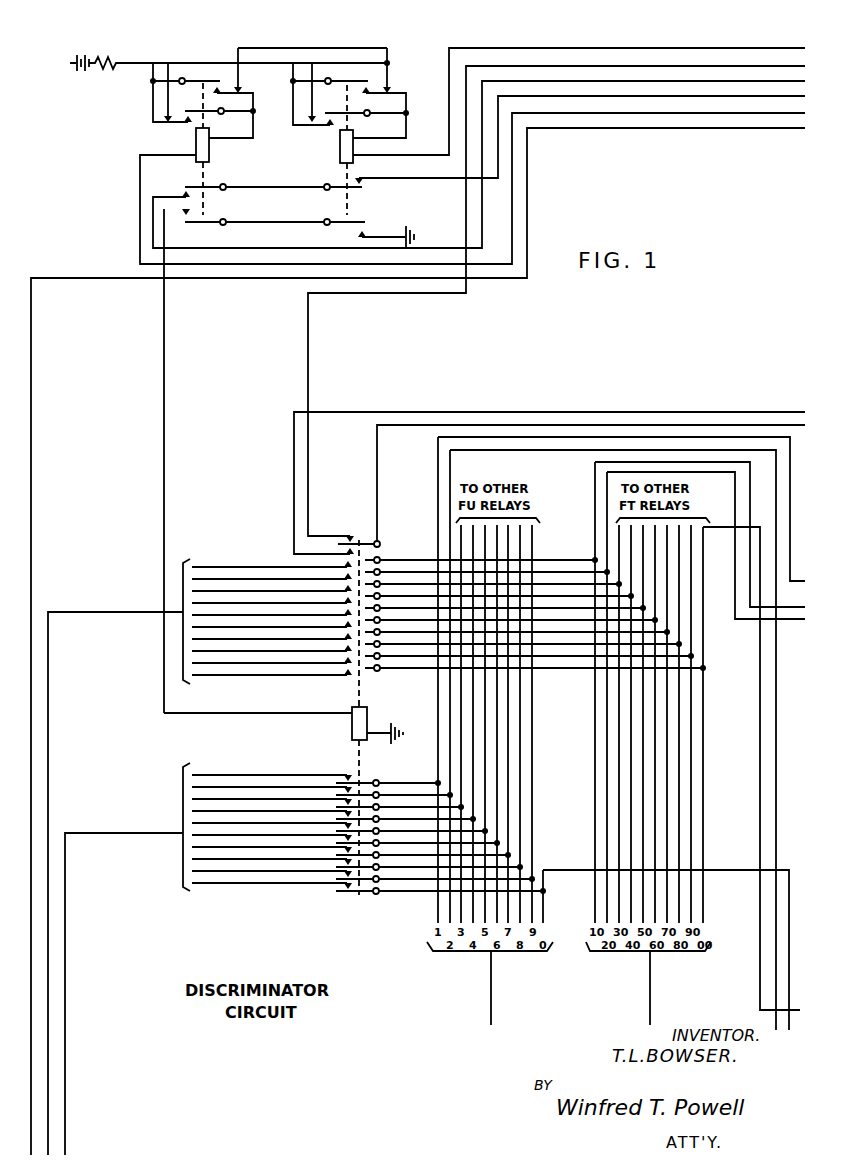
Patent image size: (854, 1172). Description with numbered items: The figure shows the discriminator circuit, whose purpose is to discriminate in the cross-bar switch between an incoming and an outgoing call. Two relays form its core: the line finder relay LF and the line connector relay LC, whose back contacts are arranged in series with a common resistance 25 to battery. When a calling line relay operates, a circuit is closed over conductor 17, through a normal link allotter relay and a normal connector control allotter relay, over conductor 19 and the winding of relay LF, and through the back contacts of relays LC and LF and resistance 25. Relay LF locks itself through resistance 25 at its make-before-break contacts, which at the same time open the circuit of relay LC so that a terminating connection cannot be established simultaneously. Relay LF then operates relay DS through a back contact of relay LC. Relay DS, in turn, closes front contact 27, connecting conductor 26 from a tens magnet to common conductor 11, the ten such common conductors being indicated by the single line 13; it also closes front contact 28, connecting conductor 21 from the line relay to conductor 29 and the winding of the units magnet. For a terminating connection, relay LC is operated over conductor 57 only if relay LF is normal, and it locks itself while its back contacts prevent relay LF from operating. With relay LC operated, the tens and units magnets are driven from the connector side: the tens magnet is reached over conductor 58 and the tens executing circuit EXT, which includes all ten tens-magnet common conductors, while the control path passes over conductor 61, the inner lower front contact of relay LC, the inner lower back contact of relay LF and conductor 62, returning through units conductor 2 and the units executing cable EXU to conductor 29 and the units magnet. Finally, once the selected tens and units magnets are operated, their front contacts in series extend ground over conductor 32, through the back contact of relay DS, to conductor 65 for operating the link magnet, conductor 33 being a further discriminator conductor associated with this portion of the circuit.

The resistance 25 is at (110, 56).
The conductor 57 is at (752, 48).
The conductor 65 is at (752, 66).
The conductor 62 is at (752, 81).
The conductor 61 is at (752, 96).
The conductor 19 is at (783, 114).
The conductor 17 is at (783, 129).
The conductor 33 is at (738, 400).
The conductor 32 is at (760, 425).
The front contact of relay DS 27 is at (382, 556).
The conductor 11 is at (205, 566).
The single line 13 is at (48, 1108).
The units conductor 2 is at (65, 1108).
The conductor 21 is at (218, 786).
The front contact of relay DS 28 is at (372, 797).
The conductor 26 is at (782, 596).
The conductor 58 is at (783, 620).
The conductor 29 is at (768, 1018).
The line finder relay LF is at (210, 150).
The line connector relay LC is at (339, 148).
The relay DS is at (368, 716).
The units executing cable EXU is at (491, 1003).
The tens executing circuit EXT is at (650, 1003).